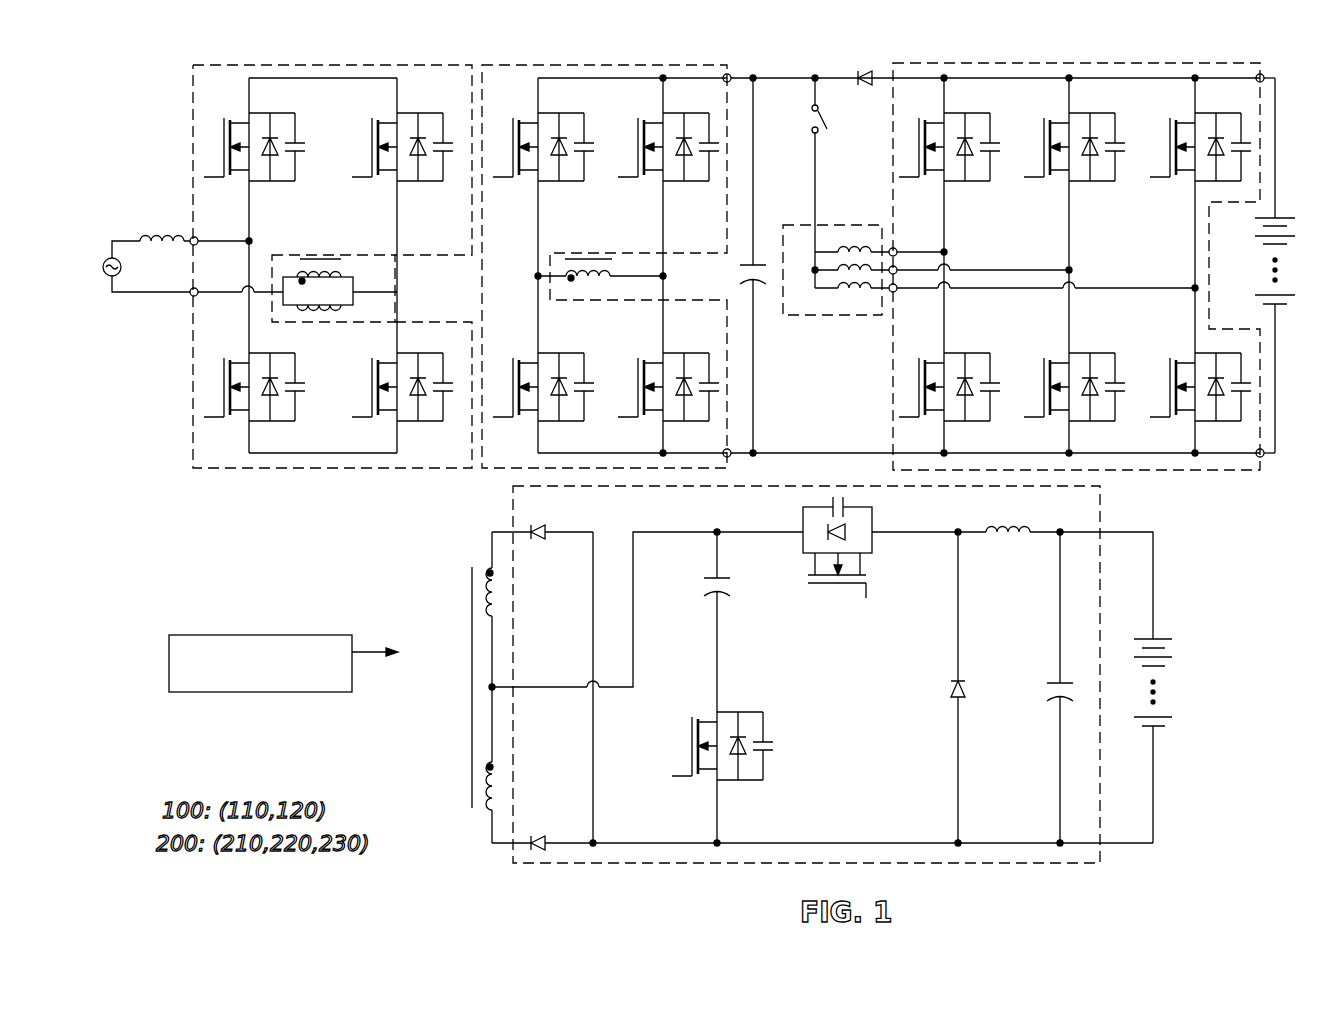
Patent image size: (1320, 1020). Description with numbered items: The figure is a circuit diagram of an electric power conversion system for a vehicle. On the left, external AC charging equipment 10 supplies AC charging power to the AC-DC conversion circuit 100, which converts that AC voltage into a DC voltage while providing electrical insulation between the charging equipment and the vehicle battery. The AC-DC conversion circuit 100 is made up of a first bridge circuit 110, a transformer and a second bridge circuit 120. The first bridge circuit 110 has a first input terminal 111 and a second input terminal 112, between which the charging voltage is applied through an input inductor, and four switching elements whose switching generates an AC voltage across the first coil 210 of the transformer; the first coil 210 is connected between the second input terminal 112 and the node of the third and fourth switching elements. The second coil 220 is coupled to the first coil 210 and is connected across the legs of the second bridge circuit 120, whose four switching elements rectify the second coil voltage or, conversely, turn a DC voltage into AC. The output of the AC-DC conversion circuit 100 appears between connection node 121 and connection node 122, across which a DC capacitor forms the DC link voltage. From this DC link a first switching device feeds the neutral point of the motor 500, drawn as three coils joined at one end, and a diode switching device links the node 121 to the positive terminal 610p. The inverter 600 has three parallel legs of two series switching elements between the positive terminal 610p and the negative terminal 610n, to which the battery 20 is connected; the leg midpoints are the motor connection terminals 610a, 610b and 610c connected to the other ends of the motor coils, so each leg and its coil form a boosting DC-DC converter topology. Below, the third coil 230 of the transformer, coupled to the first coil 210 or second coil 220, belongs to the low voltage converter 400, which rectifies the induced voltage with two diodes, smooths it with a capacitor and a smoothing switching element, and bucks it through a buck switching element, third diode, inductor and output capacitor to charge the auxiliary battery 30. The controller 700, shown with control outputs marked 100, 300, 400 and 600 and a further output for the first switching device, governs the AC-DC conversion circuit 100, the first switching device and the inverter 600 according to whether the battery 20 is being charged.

The AC charging equipment 10 is at (112, 278).
The battery 20 is at (1253, 238).
The auxiliary battery 30 is at (1172, 636).
The AC-DC conversion circuit 100 is at (445, 320).
The first bridge circuit 110 is at (290, 64).
The first input terminal 111 is at (191, 238).
The second input terminal 112 is at (191, 296).
The second bridge circuit 120 is at (576, 64).
The connection node 121 is at (729, 74).
The connection node 122 is at (731, 457).
The first coil 210 is at (342, 276).
The second coil 220 is at (598, 282).
The third coil 230 is at (497, 586).
The DC link unit 300 is at (236, 635).
The low voltage converter 400 is at (513, 501).
The motor 500 is at (783, 318).
The inverter 600 is at (1017, 62).
The motor connection terminal 610a is at (890, 248).
The motor connection terminal 610b is at (897, 268).
The motor connection terminal 610c is at (891, 293).
The positive terminal 610p is at (1262, 74).
The negative terminal 610n is at (1263, 458).
The controller 700 is at (222, 693).